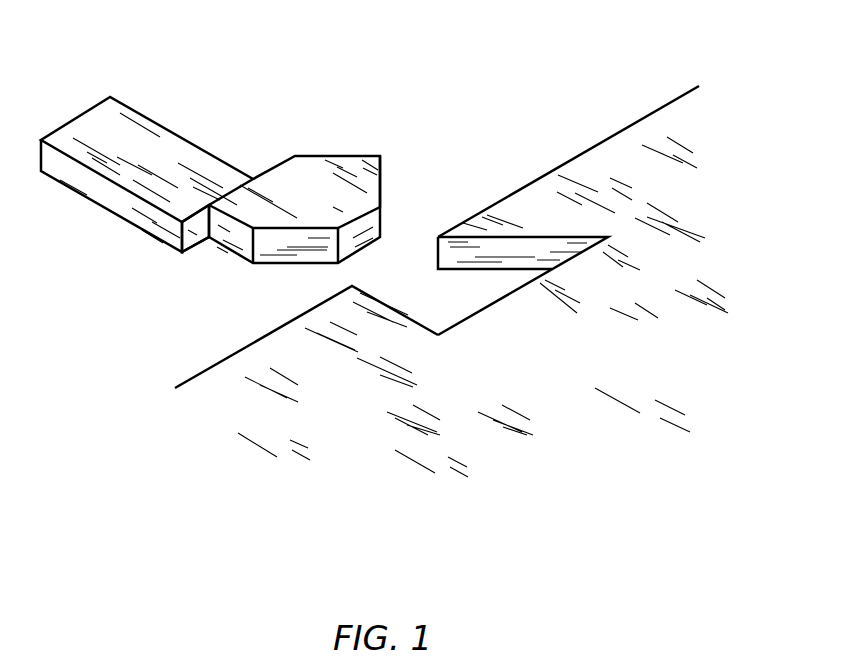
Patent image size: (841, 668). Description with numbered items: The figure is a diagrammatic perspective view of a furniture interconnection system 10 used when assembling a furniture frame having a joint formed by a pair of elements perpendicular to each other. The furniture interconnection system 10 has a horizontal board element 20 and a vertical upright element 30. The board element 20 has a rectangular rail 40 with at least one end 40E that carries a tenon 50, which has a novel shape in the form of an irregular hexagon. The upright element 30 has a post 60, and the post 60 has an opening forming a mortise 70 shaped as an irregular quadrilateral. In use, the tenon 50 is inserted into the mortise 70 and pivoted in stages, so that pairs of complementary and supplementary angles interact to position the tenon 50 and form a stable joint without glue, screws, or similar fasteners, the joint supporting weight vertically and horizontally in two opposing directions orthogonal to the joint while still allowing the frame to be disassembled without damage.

The furniture interconnection system 10 is at (131, 320).
The board element 20 is at (219, 92).
The upright element 30 is at (565, 125).
The rectangular rail 40 is at (90, 203).
The end 40E is at (194, 228).
The tenon 50 is at (307, 166).
The post 60 is at (255, 358).
The mortise 70 is at (426, 292).